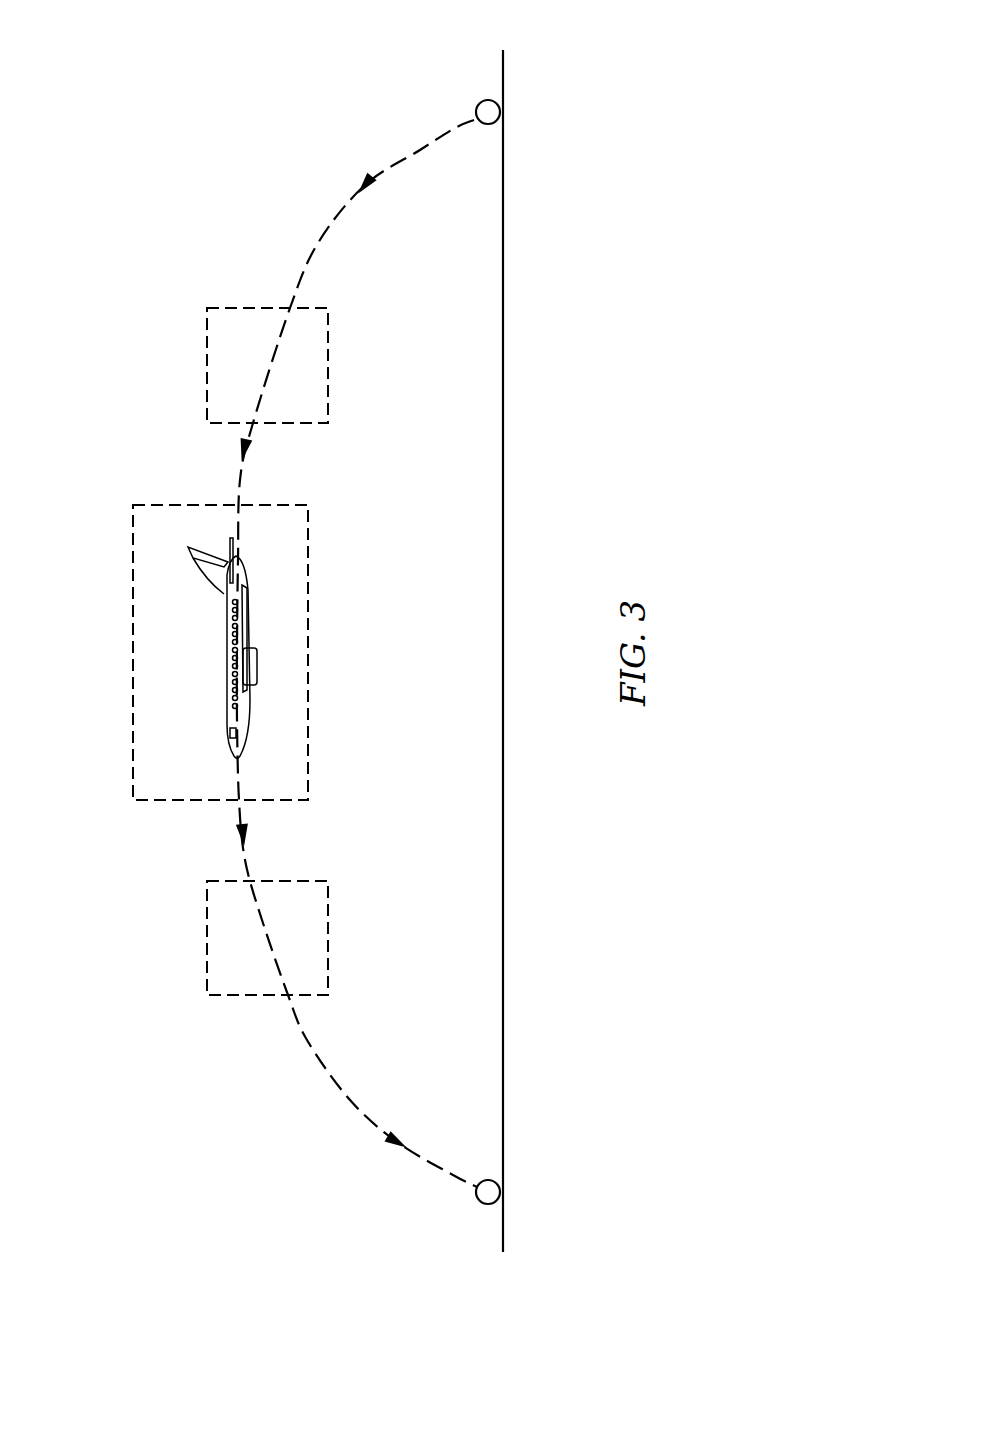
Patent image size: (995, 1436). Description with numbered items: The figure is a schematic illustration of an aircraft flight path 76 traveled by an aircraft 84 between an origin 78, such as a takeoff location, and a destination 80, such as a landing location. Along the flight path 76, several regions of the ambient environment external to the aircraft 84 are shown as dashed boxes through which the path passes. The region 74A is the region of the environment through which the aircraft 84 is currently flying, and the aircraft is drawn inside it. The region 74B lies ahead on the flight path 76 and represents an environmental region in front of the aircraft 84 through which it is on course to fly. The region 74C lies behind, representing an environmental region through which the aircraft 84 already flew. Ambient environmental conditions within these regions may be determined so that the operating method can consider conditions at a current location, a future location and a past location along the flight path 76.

The region of the environment 74A is at (133, 680).
The region of the environment 74B is at (207, 940).
The region of the environment 74C is at (207, 363).
The flight path 76 is at (318, 243).
The origin 78 is at (480, 100).
The destination 80 is at (480, 1204).
The aircraft 84 is at (249, 618).